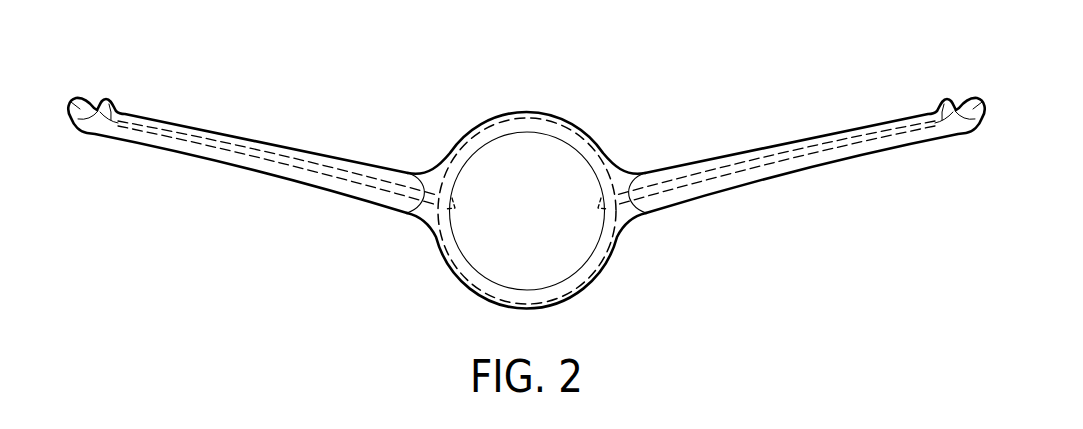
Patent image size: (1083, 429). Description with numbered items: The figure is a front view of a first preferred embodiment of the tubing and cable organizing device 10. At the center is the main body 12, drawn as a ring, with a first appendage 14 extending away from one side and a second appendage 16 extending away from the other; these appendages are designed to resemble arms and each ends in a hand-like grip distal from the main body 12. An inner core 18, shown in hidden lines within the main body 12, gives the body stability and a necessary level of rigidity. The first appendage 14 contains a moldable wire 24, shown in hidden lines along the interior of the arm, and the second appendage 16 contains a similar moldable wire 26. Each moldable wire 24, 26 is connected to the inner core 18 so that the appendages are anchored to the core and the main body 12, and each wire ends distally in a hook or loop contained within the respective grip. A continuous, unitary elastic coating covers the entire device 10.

The tubing and cable organizing device 10 is at (450, 103).
The main body 12 is at (457, 283).
The first appendage 14 is at (292, 183).
The second appendage 16 is at (800, 172).
The inner core 18 is at (575, 140).
The moldable wire 24 is at (256, 152).
The moldable wire 26 is at (770, 157).